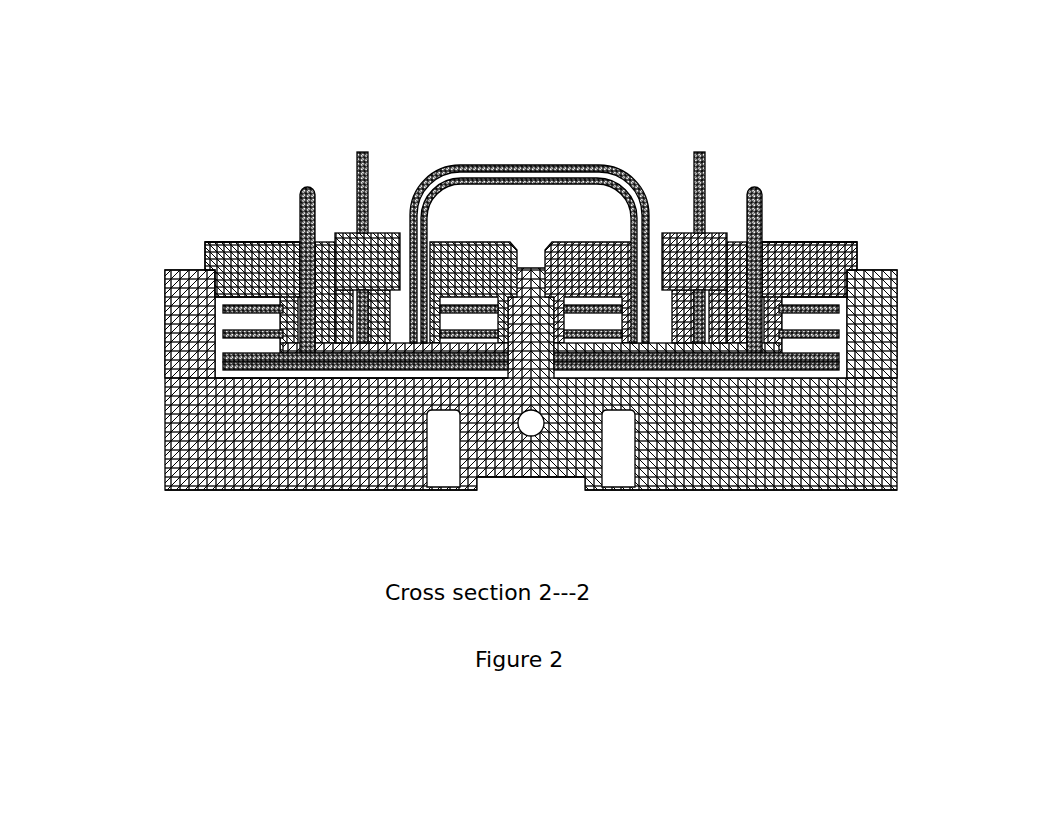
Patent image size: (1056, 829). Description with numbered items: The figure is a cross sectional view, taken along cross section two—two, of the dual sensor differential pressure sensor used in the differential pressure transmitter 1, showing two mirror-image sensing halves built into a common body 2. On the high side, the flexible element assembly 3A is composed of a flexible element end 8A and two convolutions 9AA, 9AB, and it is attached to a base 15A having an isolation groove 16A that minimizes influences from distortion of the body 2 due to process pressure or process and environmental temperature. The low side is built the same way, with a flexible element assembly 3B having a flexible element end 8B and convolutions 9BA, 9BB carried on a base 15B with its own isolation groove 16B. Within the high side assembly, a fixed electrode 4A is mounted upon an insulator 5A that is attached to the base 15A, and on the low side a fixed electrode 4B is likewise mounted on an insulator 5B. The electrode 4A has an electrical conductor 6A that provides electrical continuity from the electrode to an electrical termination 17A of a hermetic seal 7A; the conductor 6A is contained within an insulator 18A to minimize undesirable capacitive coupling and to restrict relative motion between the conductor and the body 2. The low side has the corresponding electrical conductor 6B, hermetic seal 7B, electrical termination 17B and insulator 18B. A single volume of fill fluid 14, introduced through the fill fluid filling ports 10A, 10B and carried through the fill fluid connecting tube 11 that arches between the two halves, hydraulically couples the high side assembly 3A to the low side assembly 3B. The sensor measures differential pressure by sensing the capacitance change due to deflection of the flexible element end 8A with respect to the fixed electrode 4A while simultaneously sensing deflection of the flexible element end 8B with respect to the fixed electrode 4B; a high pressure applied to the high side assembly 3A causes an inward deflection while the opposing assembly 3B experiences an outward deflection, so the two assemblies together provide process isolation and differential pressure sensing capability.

The differential pressure transmitter 1 is at (340, 590).
The body 2 is at (322, 440).
The flexible element assembly 3A is at (258, 215).
The flexible element assembly 3B is at (814, 196).
The fixed electrode 4A is at (248, 443).
The fixed electrode 4B is at (760, 488).
The insulator 5A is at (172, 491).
The insulator 5B is at (812, 433).
The electrical conductor 6A is at (346, 232).
The electrical conductor 6B is at (712, 232).
The hermetic seal 7A is at (389, 233).
The hermetic seal 7B is at (673, 228).
The flexible element end 8A is at (424, 374).
The flexible element end 8B is at (593, 373).
The convolution 9AA is at (224, 309).
The convolution 9AB is at (226, 354).
The convolution 9BA is at (838, 312).
The convolution 9BB is at (836, 343).
The fill fluid filling port 10A is at (302, 186).
The fill fluid filling port 10B is at (762, 184).
The fill fluid connecting tube 11 is at (497, 166).
The fill fluid 14 is at (533, 166).
The base 15A is at (207, 244).
The base 15B is at (855, 243).
The isolation groove 16A is at (207, 262).
The isolation groove 16B is at (852, 266).
The electrical termination 17A is at (358, 153).
The electrical termination 17B is at (705, 152).
The insulator 18A is at (167, 433).
The insulator 18B is at (848, 374).